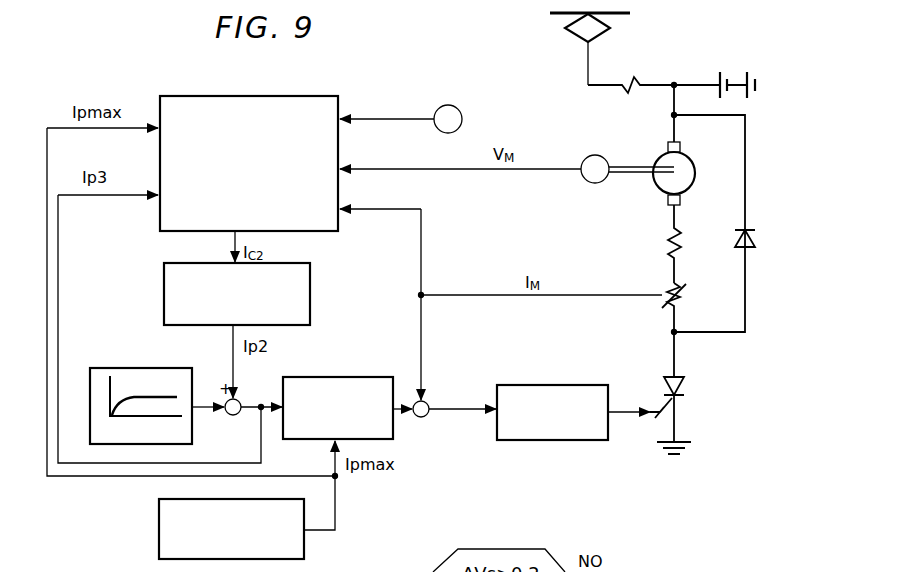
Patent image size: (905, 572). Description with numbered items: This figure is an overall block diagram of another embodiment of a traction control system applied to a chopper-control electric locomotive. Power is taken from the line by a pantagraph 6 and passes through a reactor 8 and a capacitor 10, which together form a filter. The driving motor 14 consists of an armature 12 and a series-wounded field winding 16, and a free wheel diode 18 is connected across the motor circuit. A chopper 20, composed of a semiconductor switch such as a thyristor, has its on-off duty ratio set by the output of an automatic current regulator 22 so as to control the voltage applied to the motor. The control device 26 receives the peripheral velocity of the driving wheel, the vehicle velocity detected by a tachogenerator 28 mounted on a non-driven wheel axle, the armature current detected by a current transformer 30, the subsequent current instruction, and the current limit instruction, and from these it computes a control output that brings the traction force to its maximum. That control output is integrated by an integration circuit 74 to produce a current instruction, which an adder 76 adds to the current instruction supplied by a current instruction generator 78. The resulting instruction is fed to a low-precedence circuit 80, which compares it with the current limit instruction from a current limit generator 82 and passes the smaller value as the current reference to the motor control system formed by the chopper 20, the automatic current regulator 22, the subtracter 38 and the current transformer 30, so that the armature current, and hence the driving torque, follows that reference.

The pantagraph 6 is at (563, 27).
The reactor 8 is at (627, 82).
The capacitor 10 is at (718, 70).
The armature 12 is at (681, 147).
The driving motor 14 is at (728, 190).
The series-wounded field winding 16 is at (665, 232).
The free wheel diode 18 is at (735, 245).
The chopper 20 is at (685, 393).
The automatic current regulator 22 is at (510, 385).
The control device 26 is at (258, 96).
The tachogenerator 28 is at (462, 117).
The current transformer 30 is at (681, 293).
The subtracter 38 is at (428, 414).
The integration circuit 74 is at (310, 301).
The adder 76 is at (228, 416).
The current instruction generator 78 is at (90, 378).
The low-precedence circuit 80 is at (333, 377).
The current limit generator 82 is at (159, 526).